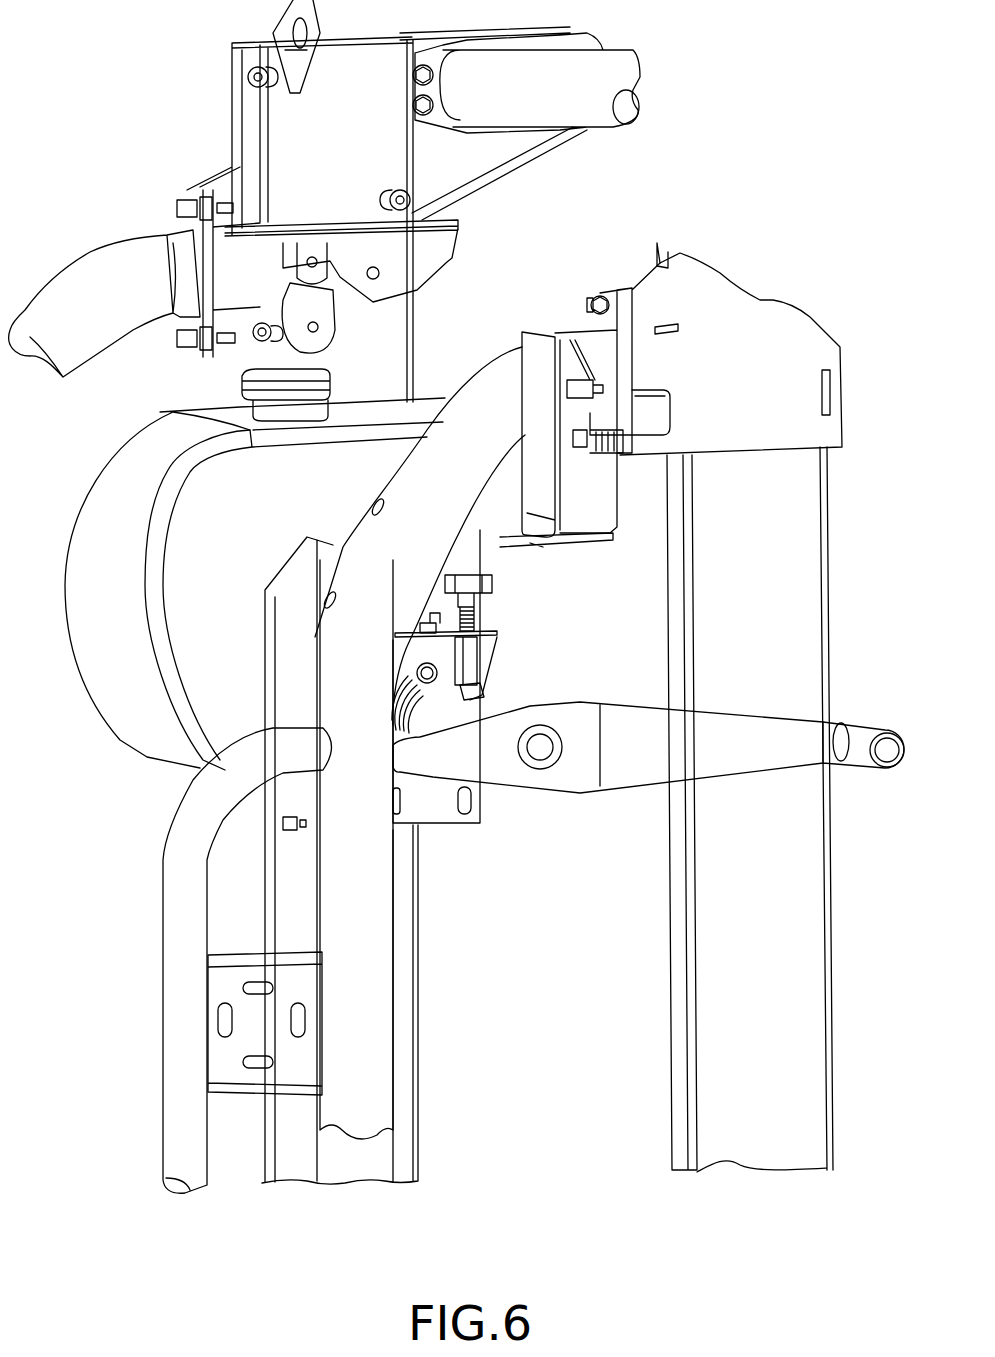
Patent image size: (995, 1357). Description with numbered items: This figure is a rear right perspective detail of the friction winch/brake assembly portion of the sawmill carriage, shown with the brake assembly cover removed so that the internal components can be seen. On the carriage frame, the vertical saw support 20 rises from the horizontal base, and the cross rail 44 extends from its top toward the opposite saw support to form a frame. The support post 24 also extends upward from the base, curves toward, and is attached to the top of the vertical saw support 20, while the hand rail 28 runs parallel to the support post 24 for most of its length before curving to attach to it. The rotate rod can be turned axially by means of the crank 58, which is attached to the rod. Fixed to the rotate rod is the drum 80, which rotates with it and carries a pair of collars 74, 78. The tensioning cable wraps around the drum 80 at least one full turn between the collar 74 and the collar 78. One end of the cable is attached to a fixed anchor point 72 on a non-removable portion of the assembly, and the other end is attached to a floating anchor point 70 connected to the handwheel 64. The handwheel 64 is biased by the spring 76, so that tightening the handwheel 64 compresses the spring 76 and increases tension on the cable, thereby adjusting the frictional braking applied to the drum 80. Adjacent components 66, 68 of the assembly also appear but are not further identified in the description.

The vertical saw support 20 is at (723, 977).
The support post 24 is at (377, 1037).
The hand rail 28 is at (173, 1052).
The cross rail 44 is at (582, 110).
The crank 58 is at (653, 750).
The handwheel 64 is at (490, 573).
The plate 66 is at (487, 638).
The bracket 68 is at (470, 648).
The floating anchor point 70 is at (477, 673).
The fixed anchor point 72 is at (440, 650).
The collar 74 is at (417, 717).
The spring 76 is at (487, 613).
The collar 78 is at (465, 684).
The drum 80 is at (397, 713).